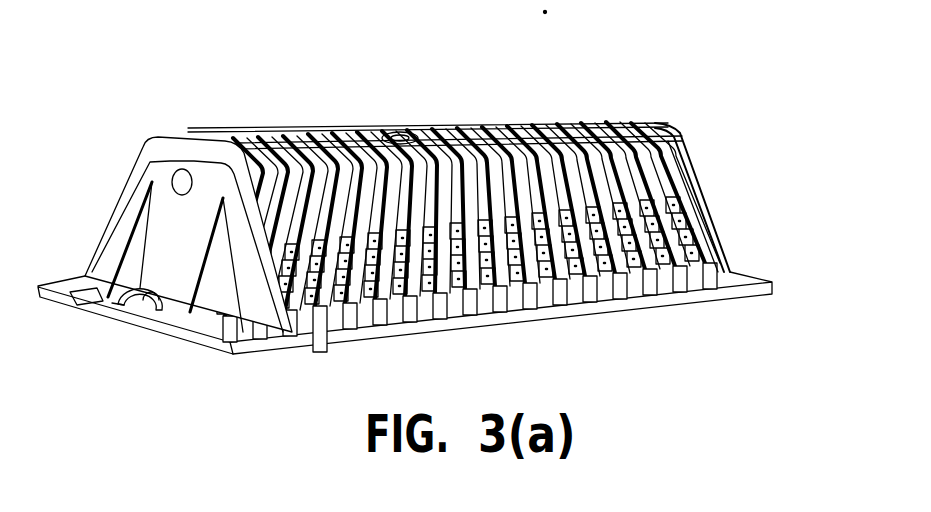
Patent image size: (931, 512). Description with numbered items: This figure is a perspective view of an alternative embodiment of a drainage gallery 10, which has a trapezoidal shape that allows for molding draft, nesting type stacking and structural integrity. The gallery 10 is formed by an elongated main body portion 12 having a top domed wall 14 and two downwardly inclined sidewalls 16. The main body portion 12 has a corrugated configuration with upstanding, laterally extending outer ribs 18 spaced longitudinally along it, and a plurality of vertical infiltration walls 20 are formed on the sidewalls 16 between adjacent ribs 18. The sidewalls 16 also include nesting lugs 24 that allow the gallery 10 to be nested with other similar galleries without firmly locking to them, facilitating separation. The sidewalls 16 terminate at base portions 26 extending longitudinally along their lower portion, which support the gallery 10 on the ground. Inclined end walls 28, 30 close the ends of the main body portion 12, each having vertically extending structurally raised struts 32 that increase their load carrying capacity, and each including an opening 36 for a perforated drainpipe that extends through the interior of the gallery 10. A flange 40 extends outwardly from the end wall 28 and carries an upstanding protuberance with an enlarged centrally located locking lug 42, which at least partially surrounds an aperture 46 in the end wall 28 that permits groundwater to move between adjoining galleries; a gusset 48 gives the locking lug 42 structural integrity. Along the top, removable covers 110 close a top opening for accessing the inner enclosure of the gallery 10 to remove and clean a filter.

The gallery 10 is at (405, 201).
The main body portion 12 is at (467, 167).
The top domed wall 14 is at (358, 133).
The sidewalls 16 is at (182, 223).
The outer ribs 18 is at (474, 228).
The vertical infiltration walls 20 is at (657, 282).
The nesting lugs 24 is at (327, 352).
The base portions 26 is at (607, 312).
The end wall 28 is at (185, 237).
The end wall 30 is at (712, 228).
The struts 32 is at (97, 307).
The opening 36 is at (176, 170).
The flange 40 is at (240, 354).
The locking lug 42 is at (114, 289).
The aperture 46 is at (131, 313).
The gusset 48 is at (150, 284).
The removable covers 110 is at (270, 130).